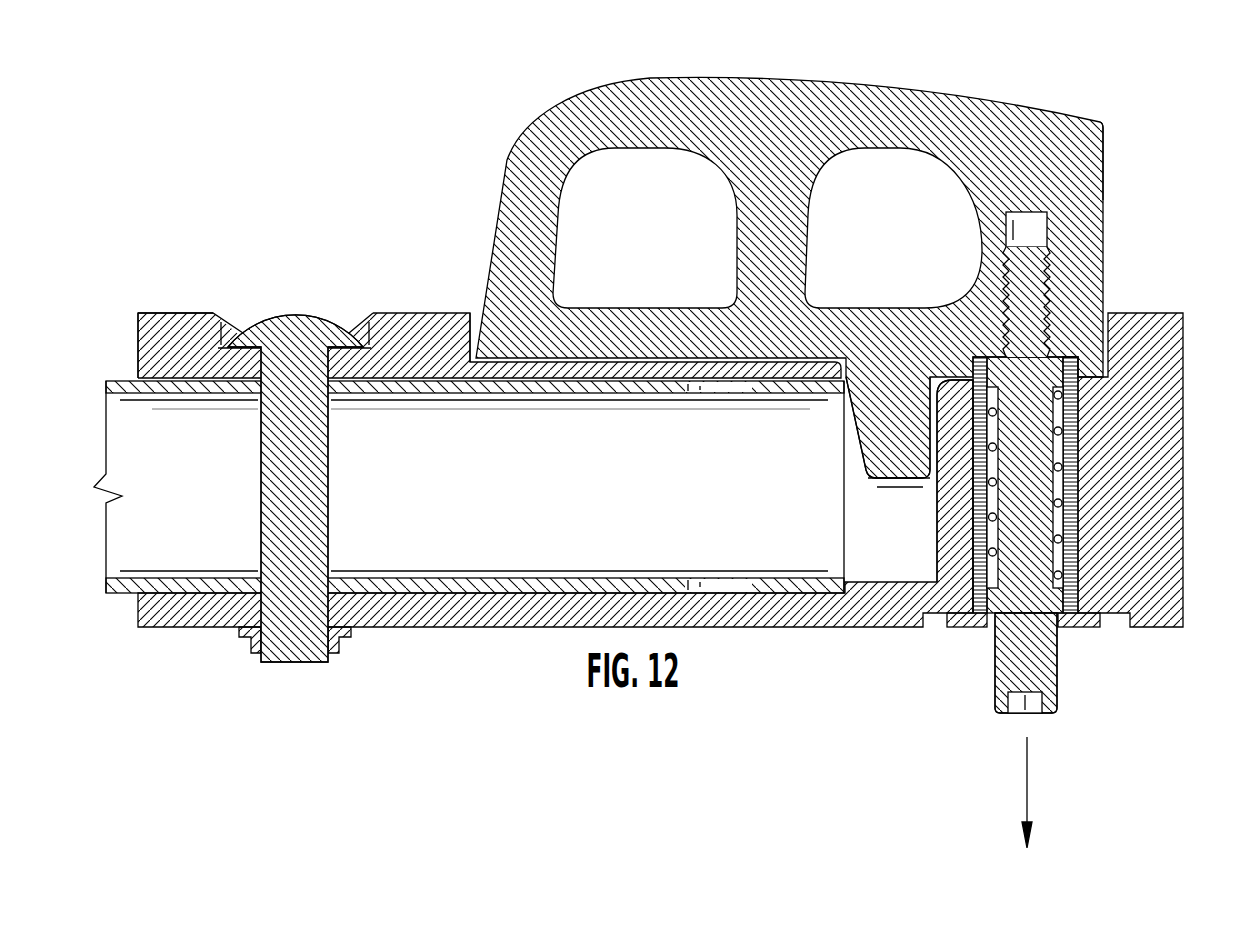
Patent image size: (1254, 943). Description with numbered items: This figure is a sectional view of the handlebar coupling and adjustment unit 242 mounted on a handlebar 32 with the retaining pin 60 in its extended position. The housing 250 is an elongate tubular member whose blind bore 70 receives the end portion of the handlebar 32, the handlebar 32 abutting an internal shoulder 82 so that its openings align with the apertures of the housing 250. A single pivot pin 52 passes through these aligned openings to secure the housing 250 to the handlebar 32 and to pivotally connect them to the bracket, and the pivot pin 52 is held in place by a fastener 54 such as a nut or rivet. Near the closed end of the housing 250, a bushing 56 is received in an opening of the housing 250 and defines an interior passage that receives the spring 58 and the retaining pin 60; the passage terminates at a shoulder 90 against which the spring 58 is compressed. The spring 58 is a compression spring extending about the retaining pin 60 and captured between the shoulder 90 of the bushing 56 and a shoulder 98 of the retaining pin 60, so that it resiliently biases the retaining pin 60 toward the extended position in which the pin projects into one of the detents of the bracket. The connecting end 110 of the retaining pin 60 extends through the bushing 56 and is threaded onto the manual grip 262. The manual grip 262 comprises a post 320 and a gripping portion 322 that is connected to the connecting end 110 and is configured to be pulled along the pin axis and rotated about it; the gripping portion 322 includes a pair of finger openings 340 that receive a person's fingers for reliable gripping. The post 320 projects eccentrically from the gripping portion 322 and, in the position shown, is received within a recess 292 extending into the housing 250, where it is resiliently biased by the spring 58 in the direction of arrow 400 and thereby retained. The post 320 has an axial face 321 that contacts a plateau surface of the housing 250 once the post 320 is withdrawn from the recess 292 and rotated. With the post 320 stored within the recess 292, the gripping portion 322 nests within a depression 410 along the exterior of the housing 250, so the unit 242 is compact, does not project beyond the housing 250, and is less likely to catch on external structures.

The handlebar coupling and adjustment unit 242 is at (367, 165).
The housing 250 is at (156, 313).
The handlebar 32 is at (137, 392).
The pivot pin 52 is at (329, 497).
The fastener 54 is at (350, 642).
The bore 70 is at (398, 314).
The depression 410 is at (467, 328).
The gripping portion 322 is at (789, 273).
The finger openings 340 is at (580, 178).
The manual grip 262 is at (1056, 108).
The connecting end 110 is at (1052, 283).
The shoulder 90 is at (1060, 362).
The bushing 56 is at (1082, 455).
The spring 58 is at (1082, 507).
The shoulder 98 is at (1070, 575).
The retaining pin 60 is at (1057, 662).
The arrow 400 is at (1028, 800).
The post 320 is at (863, 442).
The internal shoulder 82 is at (850, 607).
The axial face 321 is at (897, 480).
The recess 292 is at (937, 527).